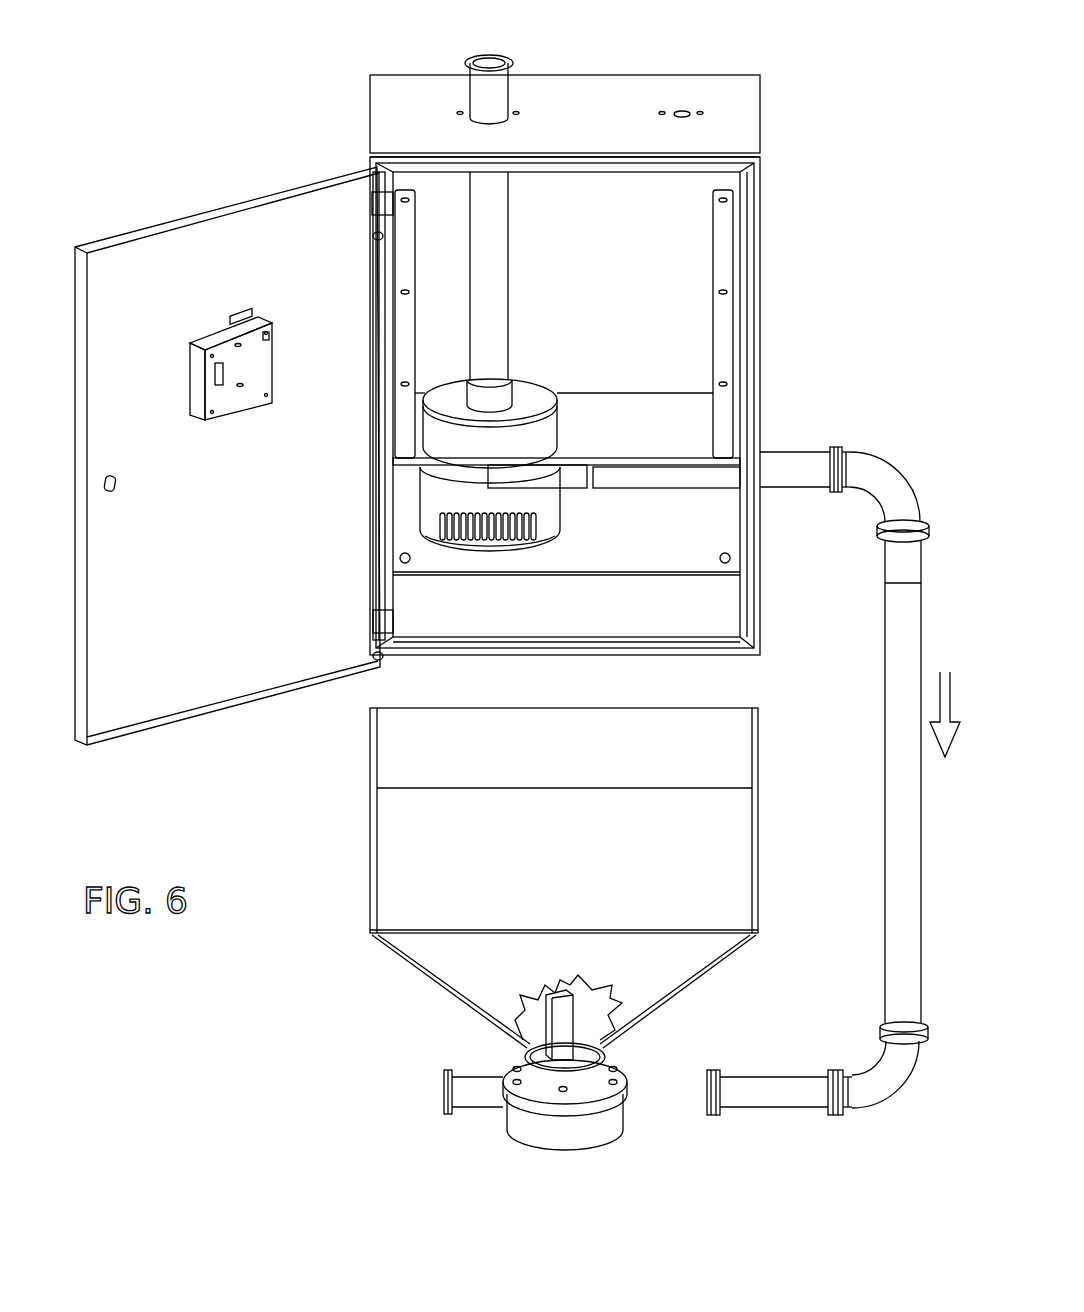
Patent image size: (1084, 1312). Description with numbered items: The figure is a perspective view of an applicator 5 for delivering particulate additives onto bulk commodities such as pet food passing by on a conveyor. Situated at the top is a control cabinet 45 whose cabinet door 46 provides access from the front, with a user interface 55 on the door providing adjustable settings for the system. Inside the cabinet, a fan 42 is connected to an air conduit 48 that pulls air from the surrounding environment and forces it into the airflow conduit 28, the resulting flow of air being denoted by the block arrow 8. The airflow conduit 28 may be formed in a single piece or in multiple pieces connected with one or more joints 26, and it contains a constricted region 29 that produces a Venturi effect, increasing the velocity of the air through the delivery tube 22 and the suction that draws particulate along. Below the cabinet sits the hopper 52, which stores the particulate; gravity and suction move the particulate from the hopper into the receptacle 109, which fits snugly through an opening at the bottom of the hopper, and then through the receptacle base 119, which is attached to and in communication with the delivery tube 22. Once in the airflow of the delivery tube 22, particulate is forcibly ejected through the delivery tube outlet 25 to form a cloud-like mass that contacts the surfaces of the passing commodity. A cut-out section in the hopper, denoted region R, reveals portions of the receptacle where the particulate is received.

The applicator 5 is at (325, 870).
The directional block arrow 8 is at (945, 700).
The delivery tube 22 is at (480, 1097).
The delivery tube outlet 25 is at (440, 1093).
The joint 26 is at (837, 1112).
The airflow conduit 28 is at (878, 470).
The constricted region 29 is at (662, 1088).
The fan 42 is at (452, 390).
The control cabinet 45 is at (762, 228).
The cabinet door 46 is at (118, 232).
The air conduit 48 is at (490, 197).
The hopper 52 is at (412, 763).
The user interface 55 is at (238, 333).
The receptacle 109 is at (593, 1153).
The receptacle base 119 is at (540, 1120).
The region R is at (542, 1022).